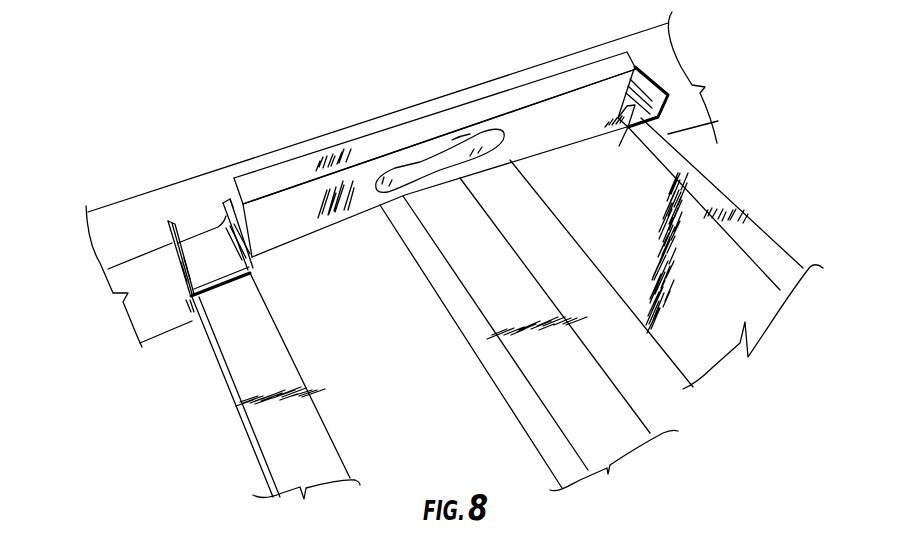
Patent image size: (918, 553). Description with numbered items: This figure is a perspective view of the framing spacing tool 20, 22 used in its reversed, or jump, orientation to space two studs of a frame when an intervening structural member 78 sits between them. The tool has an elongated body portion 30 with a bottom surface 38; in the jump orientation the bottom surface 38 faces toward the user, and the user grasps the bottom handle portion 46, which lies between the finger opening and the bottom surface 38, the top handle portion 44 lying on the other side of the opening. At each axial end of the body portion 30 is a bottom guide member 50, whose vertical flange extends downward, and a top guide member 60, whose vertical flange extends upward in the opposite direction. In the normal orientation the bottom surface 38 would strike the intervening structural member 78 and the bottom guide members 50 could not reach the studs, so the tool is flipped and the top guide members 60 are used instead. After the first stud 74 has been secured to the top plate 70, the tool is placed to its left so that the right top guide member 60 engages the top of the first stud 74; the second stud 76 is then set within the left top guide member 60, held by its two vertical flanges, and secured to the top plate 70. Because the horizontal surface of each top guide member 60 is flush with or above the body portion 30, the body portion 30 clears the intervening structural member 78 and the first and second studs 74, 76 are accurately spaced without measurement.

The framing spacing tool 20 is at (297, 139).
The framing spacing tool 22 is at (433, 165).
The body portion 30 is at (439, 177).
The bottom surface 38 is at (435, 124).
The top handle portion 44 is at (438, 178).
The bottom handle portion 46 is at (462, 130).
The bottom guide member 50 is at (201, 230).
The top guide member 60 is at (189, 306).
The top plate 70 is at (221, 188).
The first stud 74 is at (716, 187).
The second stud 76 is at (273, 437).
The intervening structural member 78 is at (620, 430).